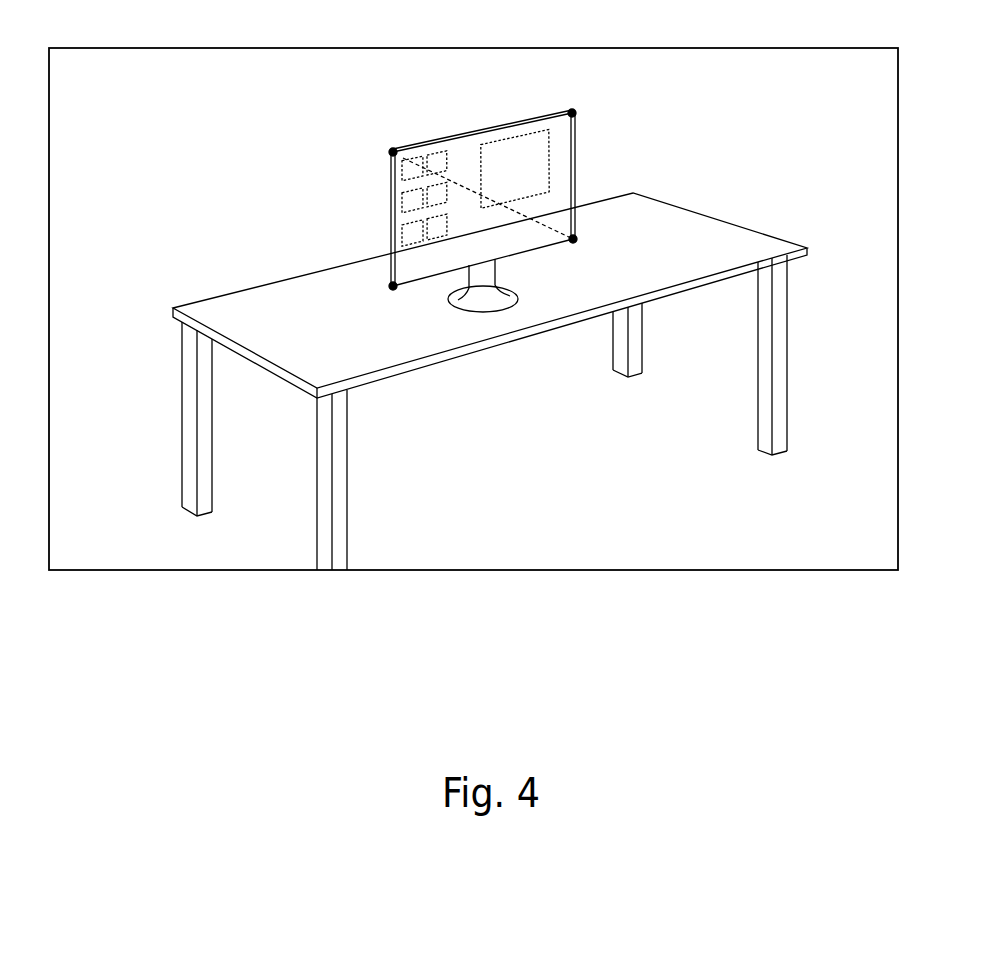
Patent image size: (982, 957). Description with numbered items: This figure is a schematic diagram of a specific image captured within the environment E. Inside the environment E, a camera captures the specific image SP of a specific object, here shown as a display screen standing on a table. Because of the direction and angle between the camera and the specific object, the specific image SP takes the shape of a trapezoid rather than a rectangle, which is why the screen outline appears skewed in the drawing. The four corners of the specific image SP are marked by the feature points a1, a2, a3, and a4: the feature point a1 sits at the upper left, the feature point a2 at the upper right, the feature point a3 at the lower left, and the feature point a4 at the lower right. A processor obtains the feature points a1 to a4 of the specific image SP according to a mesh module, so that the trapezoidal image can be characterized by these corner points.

The environment E is at (504, 286).
The specific image SP is at (476, 133).
The feature point a1 is at (375, 141).
The feature point a2 is at (590, 107).
The feature point a3 is at (375, 300).
The feature point a4 is at (592, 249).